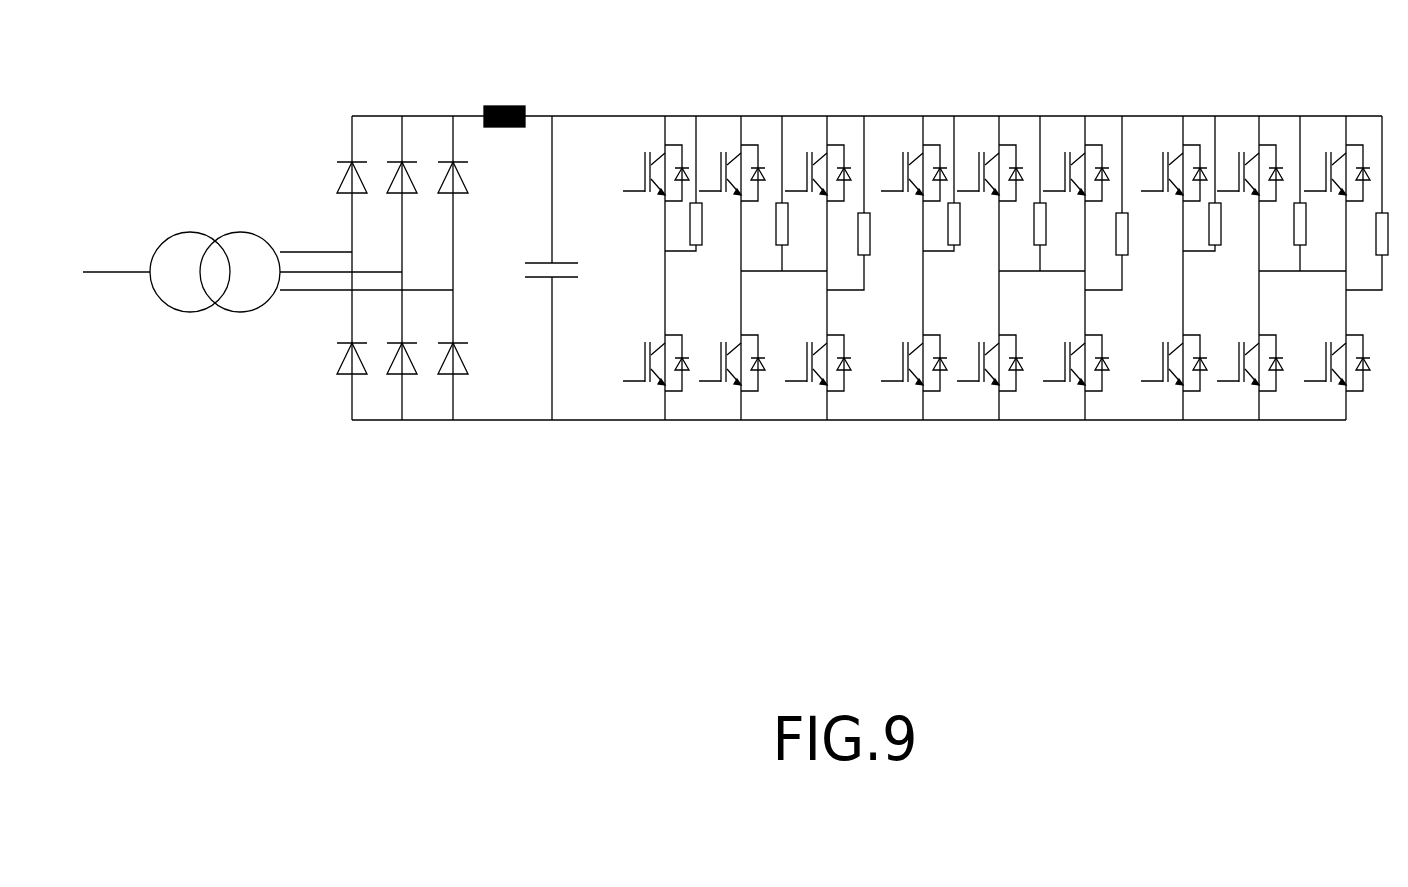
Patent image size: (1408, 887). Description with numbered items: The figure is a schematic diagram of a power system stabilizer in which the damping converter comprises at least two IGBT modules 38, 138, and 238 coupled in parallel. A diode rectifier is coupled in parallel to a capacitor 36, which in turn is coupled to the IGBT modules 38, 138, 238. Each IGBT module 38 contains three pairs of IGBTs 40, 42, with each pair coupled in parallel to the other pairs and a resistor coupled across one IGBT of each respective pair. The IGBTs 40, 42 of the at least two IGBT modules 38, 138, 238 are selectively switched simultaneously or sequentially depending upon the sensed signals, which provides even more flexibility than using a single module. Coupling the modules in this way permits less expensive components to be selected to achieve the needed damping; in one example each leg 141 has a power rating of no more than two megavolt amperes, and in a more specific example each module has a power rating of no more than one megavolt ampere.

The capacitor 36 is at (552, 280).
The IGBT module 38 is at (726, 277).
The IGBT 40 is at (636, 417).
The IGBT 42 is at (643, 165).
The IGBT module 138 is at (920, 442).
The leg 141 is at (1202, 255).
The IGBT module 238 is at (1264, 315).